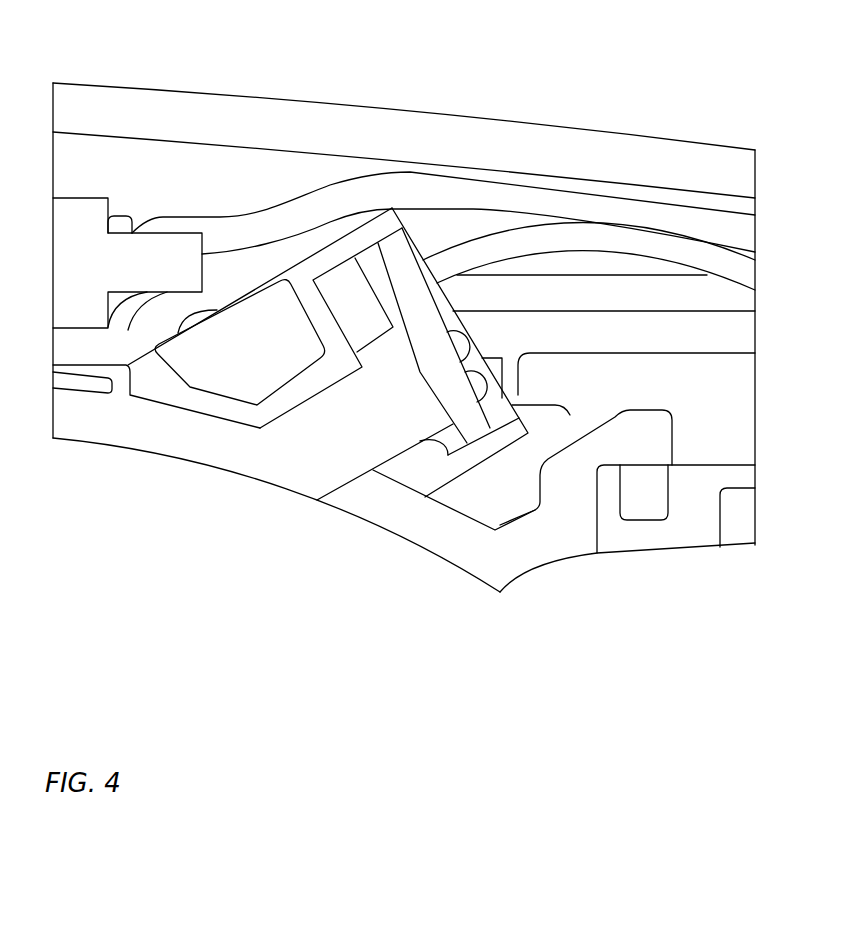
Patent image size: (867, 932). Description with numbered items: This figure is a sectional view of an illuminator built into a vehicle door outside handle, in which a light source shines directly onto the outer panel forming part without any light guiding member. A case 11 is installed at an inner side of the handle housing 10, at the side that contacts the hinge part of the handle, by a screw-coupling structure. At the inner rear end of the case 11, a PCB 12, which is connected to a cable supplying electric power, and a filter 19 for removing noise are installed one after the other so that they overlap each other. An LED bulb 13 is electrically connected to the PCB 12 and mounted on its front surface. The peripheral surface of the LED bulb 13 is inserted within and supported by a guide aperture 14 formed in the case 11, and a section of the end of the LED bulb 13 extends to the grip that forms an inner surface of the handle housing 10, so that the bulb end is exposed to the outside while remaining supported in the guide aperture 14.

The handle housing 10 is at (252, 120).
The filter 19 is at (412, 263).
The PCB 12 is at (475, 430).
The guide aperture 14 is at (305, 400).
The case 11 is at (217, 403).
The LED bulb 13 is at (340, 463).